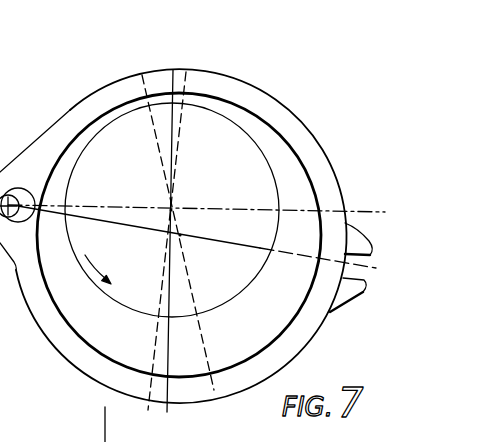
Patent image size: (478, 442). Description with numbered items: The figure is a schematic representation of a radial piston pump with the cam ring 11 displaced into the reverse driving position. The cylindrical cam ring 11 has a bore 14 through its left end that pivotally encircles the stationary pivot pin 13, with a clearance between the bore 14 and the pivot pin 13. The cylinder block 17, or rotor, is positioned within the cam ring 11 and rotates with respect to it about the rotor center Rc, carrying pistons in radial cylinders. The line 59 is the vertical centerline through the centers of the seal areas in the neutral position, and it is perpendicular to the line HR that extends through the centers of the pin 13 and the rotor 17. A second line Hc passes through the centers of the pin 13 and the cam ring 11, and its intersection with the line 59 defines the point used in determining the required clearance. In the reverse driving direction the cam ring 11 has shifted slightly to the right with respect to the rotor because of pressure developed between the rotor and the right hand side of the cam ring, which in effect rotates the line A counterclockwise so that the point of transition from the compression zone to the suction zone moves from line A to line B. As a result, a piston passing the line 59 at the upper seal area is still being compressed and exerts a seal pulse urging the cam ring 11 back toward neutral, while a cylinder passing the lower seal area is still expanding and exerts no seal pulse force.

The cam ring 11 is at (279, 110).
The pivot pin 13 is at (7, 220).
The bore 14 is at (21, 191).
The cylinder block 17 is at (103, 126).
The centerline of the seal areas 59 is at (171, 70).
The line A is at (191, 72).
The line B is at (141, 83).
The rotor center Rc is at (172, 210).
The line HR is at (385, 212).
The line Hc is at (197, 211).